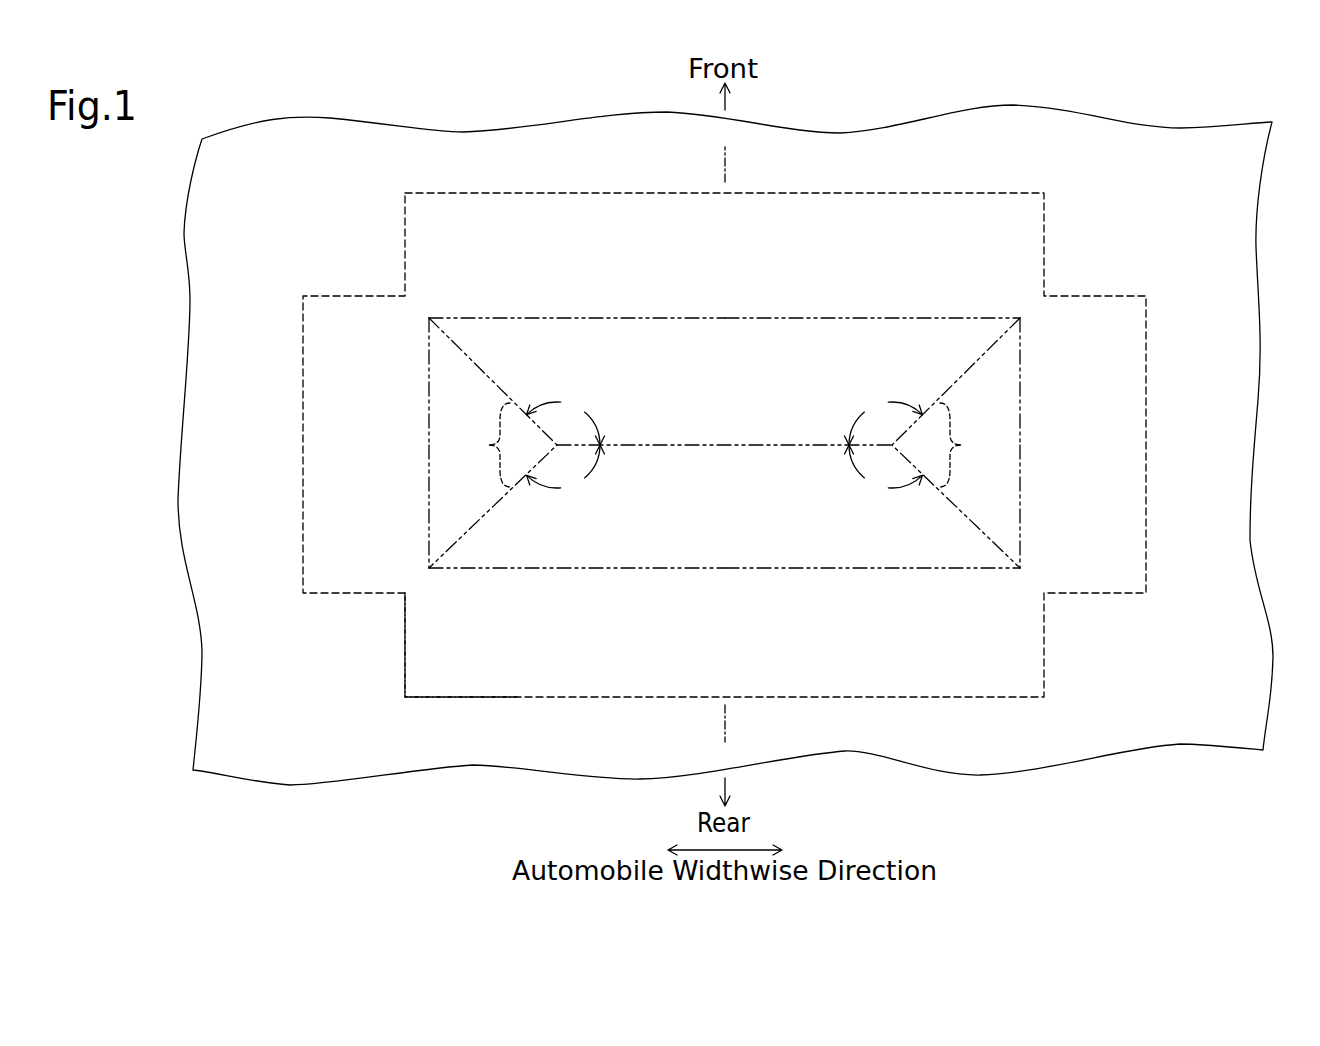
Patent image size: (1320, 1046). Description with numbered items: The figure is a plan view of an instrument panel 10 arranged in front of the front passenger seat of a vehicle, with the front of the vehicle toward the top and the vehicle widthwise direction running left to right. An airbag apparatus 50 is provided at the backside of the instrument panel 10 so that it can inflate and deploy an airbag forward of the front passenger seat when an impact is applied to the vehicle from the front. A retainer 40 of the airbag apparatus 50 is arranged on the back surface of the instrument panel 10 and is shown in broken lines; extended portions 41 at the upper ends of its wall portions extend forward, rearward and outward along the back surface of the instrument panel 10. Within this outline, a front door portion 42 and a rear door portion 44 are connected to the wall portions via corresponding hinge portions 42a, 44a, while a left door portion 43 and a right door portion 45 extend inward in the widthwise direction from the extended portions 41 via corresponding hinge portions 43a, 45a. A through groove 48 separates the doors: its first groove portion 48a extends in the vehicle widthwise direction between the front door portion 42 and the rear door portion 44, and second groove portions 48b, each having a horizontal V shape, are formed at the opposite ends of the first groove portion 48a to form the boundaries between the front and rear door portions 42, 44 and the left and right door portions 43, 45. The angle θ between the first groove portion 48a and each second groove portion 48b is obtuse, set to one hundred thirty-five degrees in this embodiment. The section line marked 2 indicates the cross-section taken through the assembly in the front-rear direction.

The section line of FIG. 2 is at (725, 147).
The instrument panel 10 is at (955, 772).
The retainer 40 is at (724, 436).
The extended portion 41 is at (990, 192).
The front door portion 42 is at (652, 318).
The hinge portion 42a is at (883, 318).
The left door portion 43 is at (428, 480).
The hinge portion 43a is at (428, 383).
The rear door portion 44 is at (650, 570).
The hinge portion 44a is at (885, 570).
The right door portion 45 is at (1020, 480).
The hinge portion 45a is at (1020, 383).
The through groove 48 is at (724, 443).
The first groove portion 48a is at (718, 448).
The second groove portion 48b is at (724, 443).
The airbag apparatus 50 is at (404, 712).